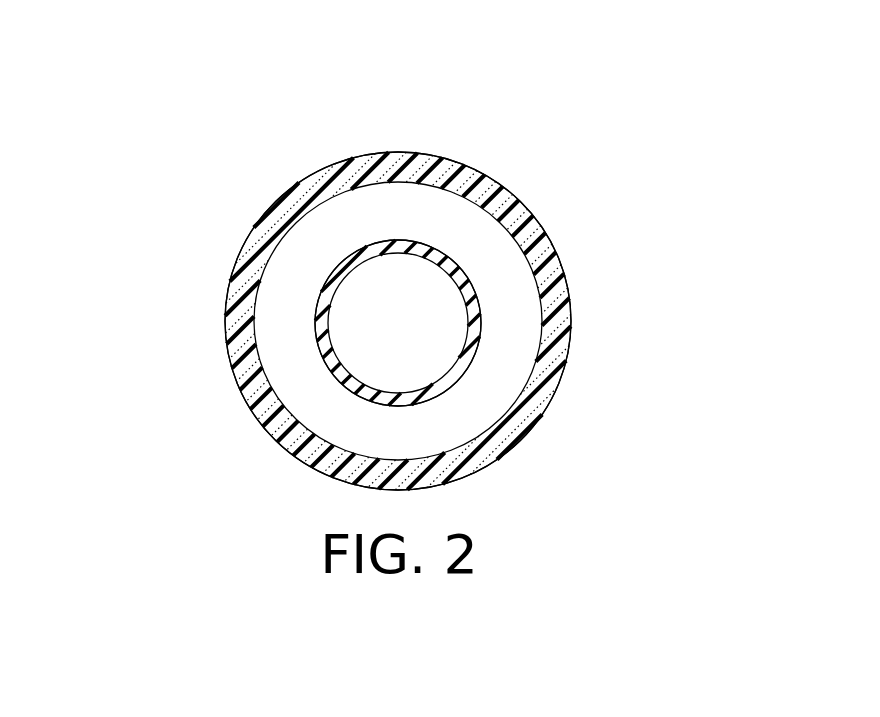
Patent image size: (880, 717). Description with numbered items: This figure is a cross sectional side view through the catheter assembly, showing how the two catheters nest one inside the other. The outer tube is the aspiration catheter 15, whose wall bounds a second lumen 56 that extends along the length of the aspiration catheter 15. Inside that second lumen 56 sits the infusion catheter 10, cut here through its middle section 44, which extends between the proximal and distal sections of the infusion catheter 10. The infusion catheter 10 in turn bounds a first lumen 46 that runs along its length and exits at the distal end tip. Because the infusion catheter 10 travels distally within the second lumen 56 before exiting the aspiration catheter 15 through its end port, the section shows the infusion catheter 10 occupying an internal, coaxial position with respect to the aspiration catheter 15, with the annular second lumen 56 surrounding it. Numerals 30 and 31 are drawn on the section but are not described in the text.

The infusion catheter 10 is at (387, 247).
The aspiration catheter 15 is at (295, 203).
The outer tubular member 30 is at (525, 400).
The inner tubular member 31 is at (470, 295).
The middle section 44 is at (318, 362).
The first lumen 46 is at (383, 323).
The second lumen 56 is at (337, 422).